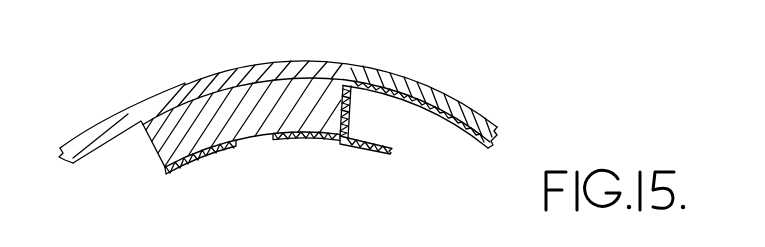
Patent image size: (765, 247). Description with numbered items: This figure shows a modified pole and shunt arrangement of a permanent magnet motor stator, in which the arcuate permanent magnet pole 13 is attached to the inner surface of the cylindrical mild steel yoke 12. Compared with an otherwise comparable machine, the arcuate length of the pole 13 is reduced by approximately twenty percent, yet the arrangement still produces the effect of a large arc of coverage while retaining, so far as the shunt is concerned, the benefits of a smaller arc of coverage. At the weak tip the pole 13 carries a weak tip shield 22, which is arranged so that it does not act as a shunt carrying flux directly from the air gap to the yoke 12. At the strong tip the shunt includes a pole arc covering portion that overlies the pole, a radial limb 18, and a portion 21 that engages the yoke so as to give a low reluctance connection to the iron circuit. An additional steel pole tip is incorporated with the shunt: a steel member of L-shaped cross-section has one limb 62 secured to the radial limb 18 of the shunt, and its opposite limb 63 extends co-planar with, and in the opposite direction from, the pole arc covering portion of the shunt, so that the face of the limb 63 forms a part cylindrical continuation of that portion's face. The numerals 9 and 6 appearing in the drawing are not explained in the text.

The yoke 12 is at (120, 116).
The permanent magnet pole 13 is at (242, 103).
The radial limb of the shunt 18 is at (346, 86).
The yoke-engaging portion of the shunt 21 is at (457, 104).
The weak tip shield 22 is at (195, 160).
The plate 9 is at (285, 140).
The joint 6 is at (344, 139).
The limb of L-shaped steel member 62 is at (354, 92).
The opposite limb of L-shaped steel member 63 is at (375, 152).